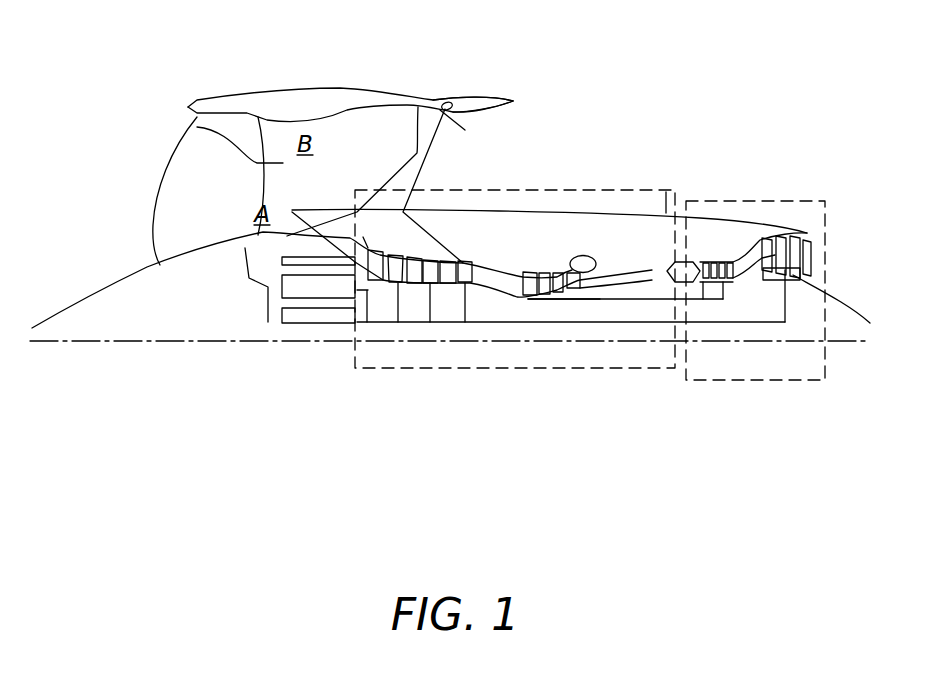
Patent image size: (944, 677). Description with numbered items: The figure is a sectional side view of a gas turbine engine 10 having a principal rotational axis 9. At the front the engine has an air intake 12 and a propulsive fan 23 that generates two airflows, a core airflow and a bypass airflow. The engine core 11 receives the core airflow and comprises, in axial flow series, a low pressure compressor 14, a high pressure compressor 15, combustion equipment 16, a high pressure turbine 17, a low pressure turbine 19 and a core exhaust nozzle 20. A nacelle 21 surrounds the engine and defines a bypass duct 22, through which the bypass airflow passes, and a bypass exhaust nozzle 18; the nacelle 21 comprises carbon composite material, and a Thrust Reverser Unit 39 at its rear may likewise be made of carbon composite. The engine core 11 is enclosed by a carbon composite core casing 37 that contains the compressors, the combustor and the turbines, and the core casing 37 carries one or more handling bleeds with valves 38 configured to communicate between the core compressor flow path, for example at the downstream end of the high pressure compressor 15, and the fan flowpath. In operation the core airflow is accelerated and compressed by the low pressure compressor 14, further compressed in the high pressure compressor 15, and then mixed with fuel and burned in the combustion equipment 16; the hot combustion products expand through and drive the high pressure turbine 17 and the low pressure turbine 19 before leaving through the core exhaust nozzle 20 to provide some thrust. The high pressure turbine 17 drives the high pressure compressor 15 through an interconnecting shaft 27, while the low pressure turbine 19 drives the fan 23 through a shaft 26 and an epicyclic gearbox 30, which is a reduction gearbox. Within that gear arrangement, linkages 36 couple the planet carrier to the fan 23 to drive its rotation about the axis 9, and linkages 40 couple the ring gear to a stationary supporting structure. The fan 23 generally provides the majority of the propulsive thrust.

The principal rotational axis 9 is at (146, 342).
The gas turbine engine 10 is at (638, 126).
The engine core 11 is at (501, 259).
The air intake 12 is at (118, 210).
The low pressure compressor 14 is at (440, 250).
The high pressure compressor 15 is at (547, 259).
The combustion equipment 16 is at (695, 260).
The high pressure turbine 17 is at (732, 242).
The bypass exhaust nozzle 18 is at (436, 101).
The low pressure turbine 19 is at (791, 208).
The core exhaust nozzle 20 is at (817, 250).
The nacelle 21 is at (290, 88).
The bypass duct 22 is at (197, 127).
The propulsive fan 23 is at (183, 183).
The shaft 26 is at (480, 322).
The interconnecting shaft 27 is at (587, 300).
The epicyclic gearbox 30 is at (249, 326).
The linkages 36 is at (243, 268).
The core casing 37 is at (668, 192).
The valves 38 is at (586, 255).
The Thrust Reverser Unit 39 is at (513, 100).
The linkages 40 is at (317, 257).